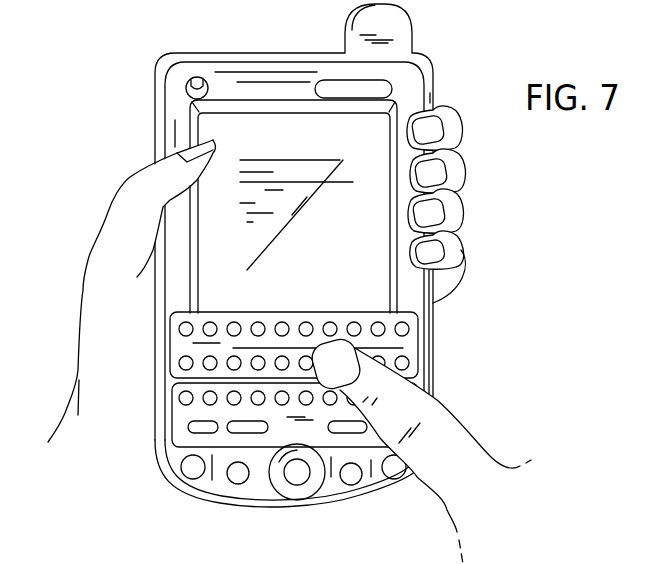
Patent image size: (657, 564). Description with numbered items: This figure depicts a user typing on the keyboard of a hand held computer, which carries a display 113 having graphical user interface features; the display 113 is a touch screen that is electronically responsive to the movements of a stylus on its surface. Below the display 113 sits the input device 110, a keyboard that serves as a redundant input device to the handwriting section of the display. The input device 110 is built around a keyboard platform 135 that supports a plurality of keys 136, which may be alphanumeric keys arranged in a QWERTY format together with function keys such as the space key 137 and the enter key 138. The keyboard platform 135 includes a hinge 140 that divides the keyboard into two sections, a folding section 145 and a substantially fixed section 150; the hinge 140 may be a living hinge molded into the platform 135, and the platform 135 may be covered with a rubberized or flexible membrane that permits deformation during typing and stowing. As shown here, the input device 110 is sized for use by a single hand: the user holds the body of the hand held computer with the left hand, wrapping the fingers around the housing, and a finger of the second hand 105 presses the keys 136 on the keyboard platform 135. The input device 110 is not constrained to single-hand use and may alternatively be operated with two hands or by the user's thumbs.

The user's hand 105 is at (386, 450).
The input device 110 is at (170, 508).
The display 113 is at (346, 270).
The keyboard platform 135 is at (408, 343).
The keys 136 is at (179, 329).
The space key 137 is at (243, 434).
The enter key 138 is at (337, 434).
The hinge 140 is at (171, 381).
The folding section 145 is at (425, 365).
The substantially fixed section 150 is at (433, 406).